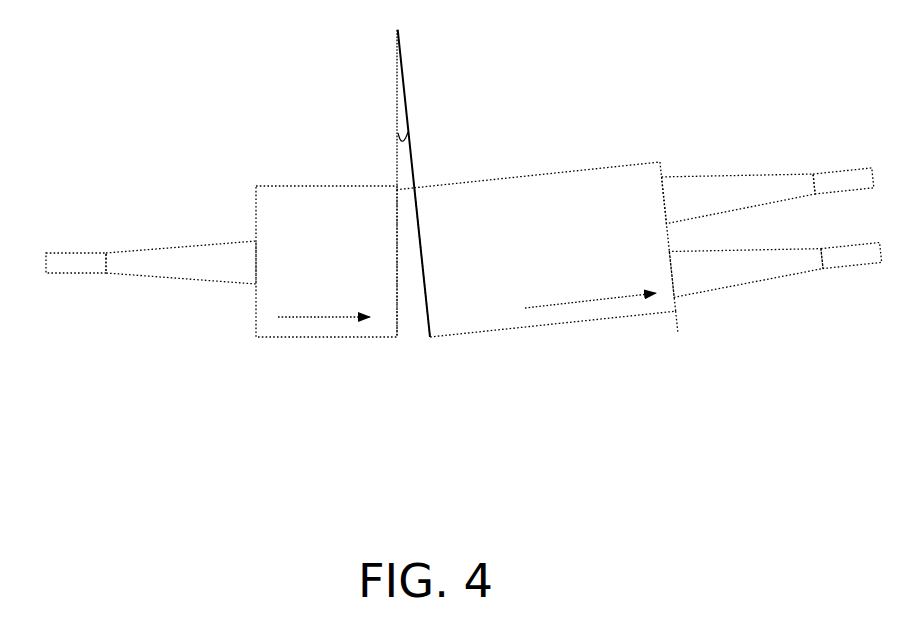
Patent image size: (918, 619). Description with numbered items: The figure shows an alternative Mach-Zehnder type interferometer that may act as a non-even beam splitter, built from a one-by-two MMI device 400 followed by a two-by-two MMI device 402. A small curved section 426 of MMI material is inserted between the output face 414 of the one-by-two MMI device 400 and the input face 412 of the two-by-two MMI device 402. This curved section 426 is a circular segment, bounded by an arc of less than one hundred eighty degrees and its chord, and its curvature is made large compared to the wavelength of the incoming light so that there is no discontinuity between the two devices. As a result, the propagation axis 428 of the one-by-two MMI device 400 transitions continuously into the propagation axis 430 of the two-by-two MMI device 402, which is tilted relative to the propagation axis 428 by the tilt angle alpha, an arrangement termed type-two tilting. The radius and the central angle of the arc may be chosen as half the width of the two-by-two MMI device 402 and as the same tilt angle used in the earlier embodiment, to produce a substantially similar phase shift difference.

The 1×2 MMI device 400 is at (326, 230).
The 2×2 MMI device 402 is at (641, 242).
The input face 412 is at (433, 344).
The output face 414 is at (393, 344).
The small curved section 426 is at (405, 313).
The propagation axis 428 is at (324, 304).
The propagation axis 430 is at (591, 287).